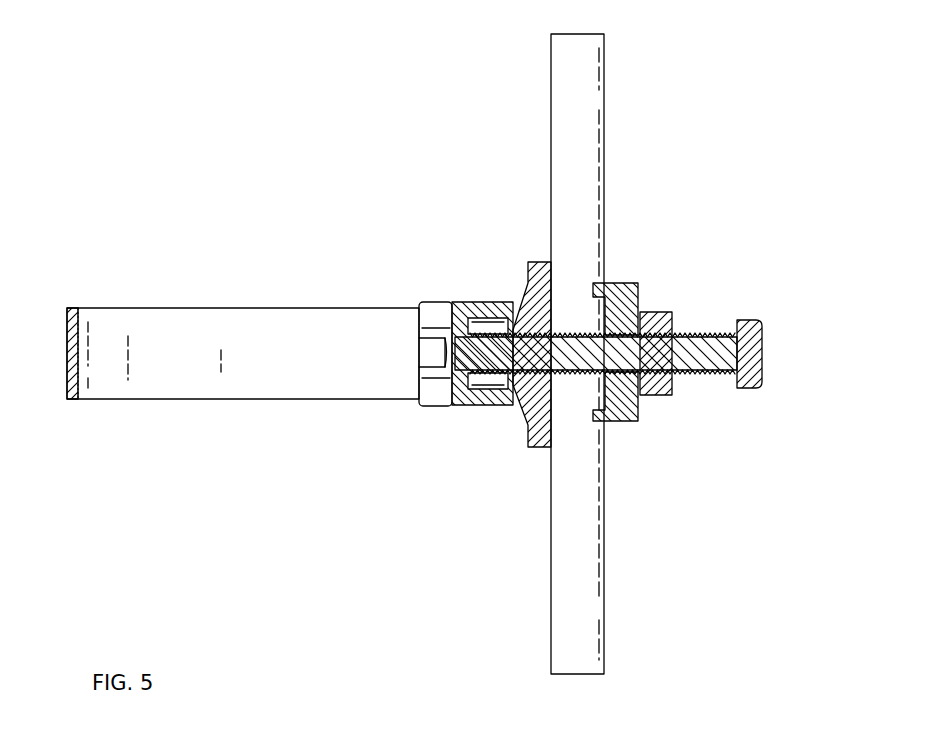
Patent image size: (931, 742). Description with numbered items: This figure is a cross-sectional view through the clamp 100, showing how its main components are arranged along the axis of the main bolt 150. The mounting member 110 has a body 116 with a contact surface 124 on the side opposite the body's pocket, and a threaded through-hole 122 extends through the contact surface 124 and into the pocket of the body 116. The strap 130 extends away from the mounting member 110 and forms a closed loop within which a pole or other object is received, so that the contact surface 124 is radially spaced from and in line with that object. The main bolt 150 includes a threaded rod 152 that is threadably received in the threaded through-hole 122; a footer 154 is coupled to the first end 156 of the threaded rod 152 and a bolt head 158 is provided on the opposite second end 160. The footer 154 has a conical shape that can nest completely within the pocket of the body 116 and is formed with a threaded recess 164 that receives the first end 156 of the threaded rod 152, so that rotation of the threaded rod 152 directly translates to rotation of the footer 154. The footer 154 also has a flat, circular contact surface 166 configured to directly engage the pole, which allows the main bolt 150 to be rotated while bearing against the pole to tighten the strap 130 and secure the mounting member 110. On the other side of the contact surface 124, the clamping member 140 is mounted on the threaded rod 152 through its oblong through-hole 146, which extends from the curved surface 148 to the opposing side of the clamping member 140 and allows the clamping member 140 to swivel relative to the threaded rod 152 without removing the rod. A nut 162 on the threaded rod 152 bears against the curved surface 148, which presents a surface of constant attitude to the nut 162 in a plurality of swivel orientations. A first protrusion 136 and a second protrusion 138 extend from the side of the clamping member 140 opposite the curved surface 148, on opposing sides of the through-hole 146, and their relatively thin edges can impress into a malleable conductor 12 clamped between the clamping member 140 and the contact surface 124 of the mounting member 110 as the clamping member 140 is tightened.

The conductor 12 is at (598, 130).
The clamp 100 is at (303, 158).
The mounting member 110 is at (489, 315).
The body 116 is at (530, 268).
The threaded through-hole 122 is at (526, 400).
The contact surface 124 is at (549, 264).
The strap 130 is at (206, 314).
The first protrusion 136 is at (592, 285).
The second protrusion 138 is at (600, 424).
The clamping member 140 is at (640, 282).
The through-hole 146 is at (636, 408).
The curved surface 148 is at (640, 296).
The main bolt 150 is at (651, 334).
The threaded rod 152 is at (690, 376).
The footer 154 is at (421, 355).
The first end 156 is at (486, 392).
The bolt head 158 is at (763, 348).
The second end 160 is at (722, 336).
The nut 162 is at (668, 406).
The threaded recess 164 is at (487, 390).
The contact surface 166 is at (448, 326).